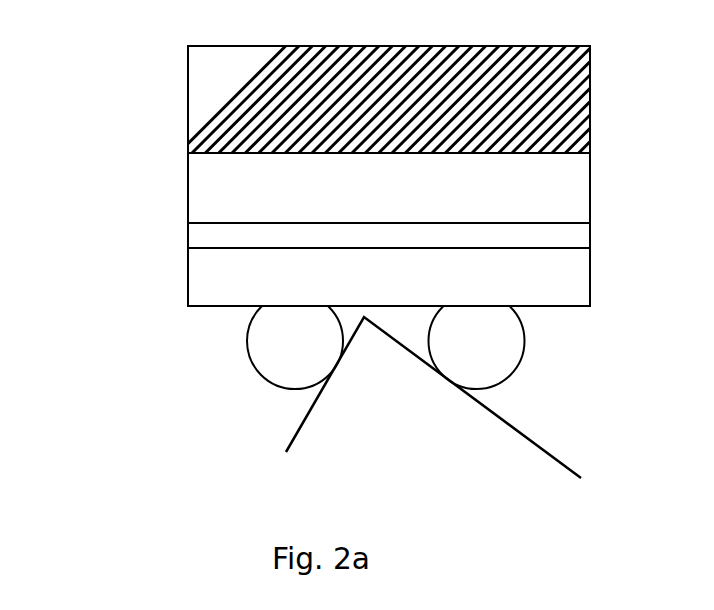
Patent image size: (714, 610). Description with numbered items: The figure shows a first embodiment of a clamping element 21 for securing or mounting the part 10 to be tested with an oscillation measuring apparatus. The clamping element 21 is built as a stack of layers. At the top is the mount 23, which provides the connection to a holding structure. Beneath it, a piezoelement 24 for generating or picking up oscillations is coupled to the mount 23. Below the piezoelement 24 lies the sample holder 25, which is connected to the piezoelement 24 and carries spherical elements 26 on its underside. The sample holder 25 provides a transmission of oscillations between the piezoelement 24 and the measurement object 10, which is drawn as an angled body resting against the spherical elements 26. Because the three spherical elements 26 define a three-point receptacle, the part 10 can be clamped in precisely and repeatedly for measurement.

The clamping element 21 is at (125, 114).
The mount 23 is at (202, 183).
The piezoelement 24 is at (202, 237).
The sample holder 25 is at (202, 295).
The spherical elements 26 is at (346, 341).
The part to be tested 10 is at (402, 417).